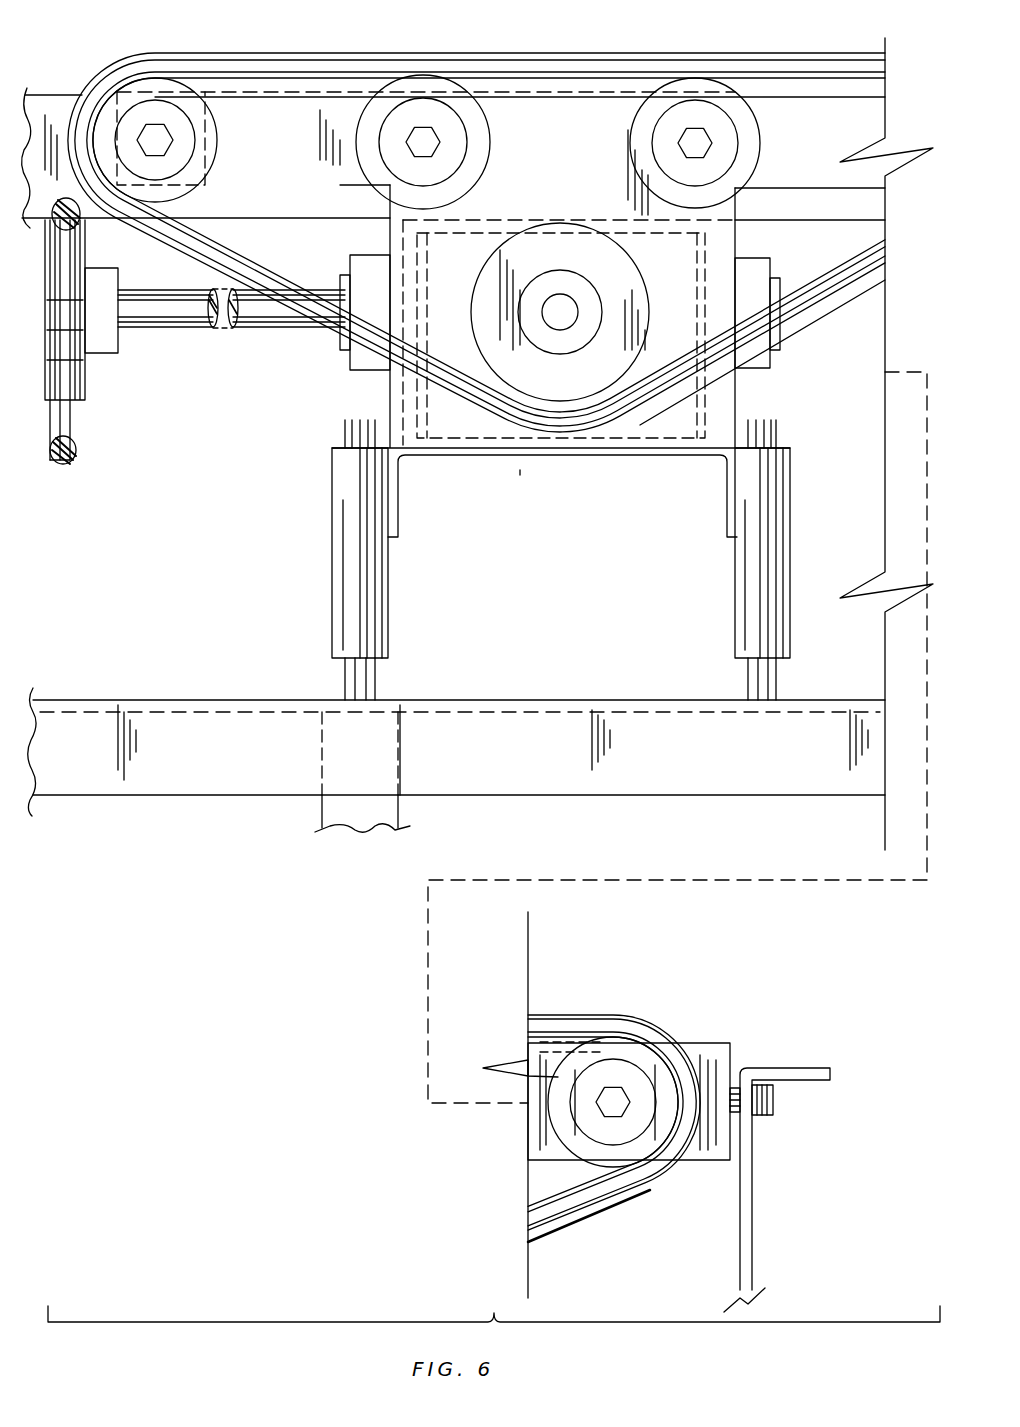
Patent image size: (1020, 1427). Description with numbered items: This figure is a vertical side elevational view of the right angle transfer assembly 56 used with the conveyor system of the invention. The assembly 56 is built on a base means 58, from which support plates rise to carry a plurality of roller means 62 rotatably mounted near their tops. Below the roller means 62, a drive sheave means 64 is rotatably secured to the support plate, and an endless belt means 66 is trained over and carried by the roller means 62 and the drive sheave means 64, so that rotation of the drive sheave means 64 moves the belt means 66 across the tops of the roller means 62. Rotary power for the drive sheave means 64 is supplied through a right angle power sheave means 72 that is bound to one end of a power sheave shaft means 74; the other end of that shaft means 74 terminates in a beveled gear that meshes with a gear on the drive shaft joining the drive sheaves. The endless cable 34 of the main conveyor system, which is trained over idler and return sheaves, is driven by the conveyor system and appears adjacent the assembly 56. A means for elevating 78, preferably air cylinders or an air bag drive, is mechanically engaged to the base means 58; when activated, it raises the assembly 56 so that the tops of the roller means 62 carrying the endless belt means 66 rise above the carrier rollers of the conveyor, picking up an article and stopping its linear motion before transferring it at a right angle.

The endless cable 34 is at (58, 192).
The right angle transfer assembly means 56 is at (520, 46).
The base means 58 is at (535, 742).
The roller means 62 is at (182, 145).
The drive sheave means 64 is at (620, 338).
The endless belt means 66 is at (645, 72).
The right angle power sheave means 72 is at (75, 310).
The power sheave shaft means 74 is at (186, 312).
The means for elevating 78 is at (322, 826).